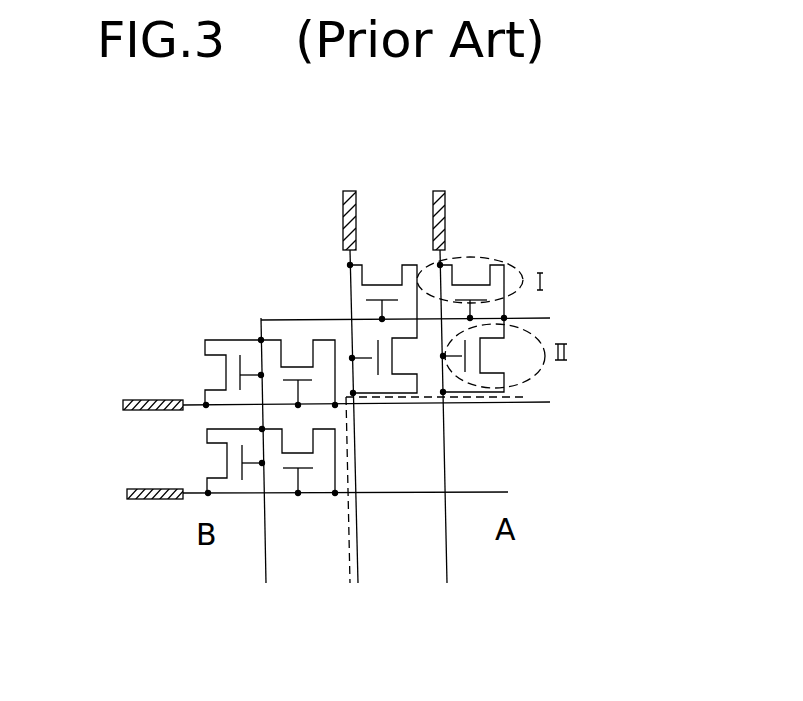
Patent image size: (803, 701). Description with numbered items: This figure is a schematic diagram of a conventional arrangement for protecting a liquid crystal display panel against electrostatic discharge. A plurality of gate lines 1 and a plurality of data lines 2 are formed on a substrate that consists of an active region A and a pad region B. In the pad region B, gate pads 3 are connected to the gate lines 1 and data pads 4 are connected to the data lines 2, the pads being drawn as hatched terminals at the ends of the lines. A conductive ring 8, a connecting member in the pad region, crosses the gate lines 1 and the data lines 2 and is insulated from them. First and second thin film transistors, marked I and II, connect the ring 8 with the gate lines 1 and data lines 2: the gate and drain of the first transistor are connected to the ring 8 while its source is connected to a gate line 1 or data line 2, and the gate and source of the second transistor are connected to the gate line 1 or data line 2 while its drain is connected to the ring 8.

The gate lines 1 is at (369, 445).
The data lines 2 is at (354, 444).
The gate pads 3 is at (163, 489).
The data pads 4 is at (356, 230).
The conductive ring 8 is at (261, 320).